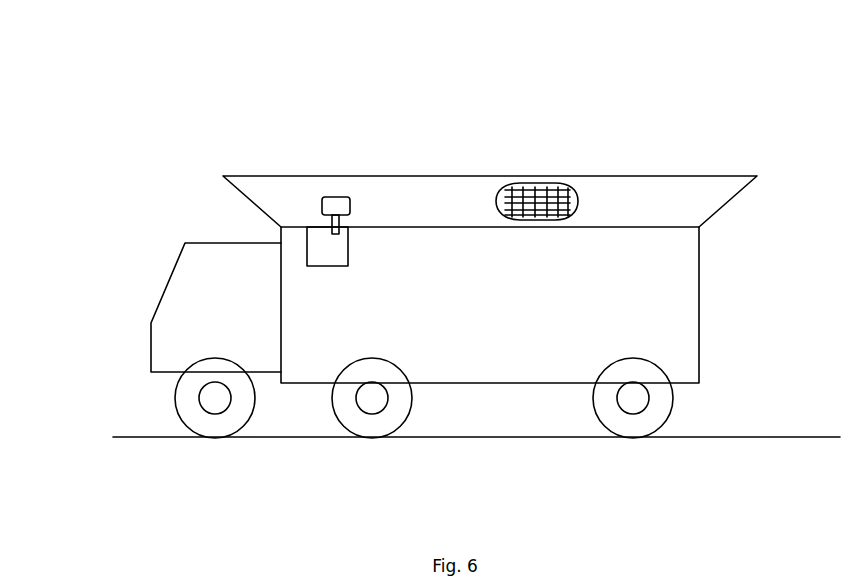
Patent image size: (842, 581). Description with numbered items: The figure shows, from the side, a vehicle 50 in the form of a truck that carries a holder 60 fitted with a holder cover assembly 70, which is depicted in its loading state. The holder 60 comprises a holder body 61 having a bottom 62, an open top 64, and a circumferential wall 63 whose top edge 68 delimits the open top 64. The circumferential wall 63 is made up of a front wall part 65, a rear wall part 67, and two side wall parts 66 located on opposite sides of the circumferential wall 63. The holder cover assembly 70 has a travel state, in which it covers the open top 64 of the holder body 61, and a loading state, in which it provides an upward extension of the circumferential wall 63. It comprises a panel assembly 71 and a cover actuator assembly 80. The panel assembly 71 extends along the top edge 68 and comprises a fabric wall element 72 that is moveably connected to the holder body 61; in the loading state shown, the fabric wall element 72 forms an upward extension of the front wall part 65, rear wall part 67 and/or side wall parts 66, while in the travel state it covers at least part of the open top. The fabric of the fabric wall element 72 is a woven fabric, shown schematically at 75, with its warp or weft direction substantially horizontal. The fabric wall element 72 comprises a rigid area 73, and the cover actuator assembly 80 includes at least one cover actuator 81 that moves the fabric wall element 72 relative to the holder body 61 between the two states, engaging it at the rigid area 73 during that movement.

The vehicle 50 is at (175, 194).
The holder 60 is at (658, 308).
The holder body 61 is at (515, 318).
The bottom 62 is at (553, 390).
The circumferential wall 63 is at (460, 328).
The open top 64 is at (386, 227).
The front wall part 65 is at (277, 283).
The side wall parts 66 is at (338, 315).
The rear wall part 67 is at (698, 262).
The top edge 68 is at (438, 225).
The holder cover assembly 70 is at (590, 142).
The panel assembly 71 is at (640, 208).
The fabric wall element 72 is at (717, 197).
The rigid area 73 is at (337, 210).
The woven fabric 75 is at (518, 183).
The cover actuator assembly 80 is at (338, 247).
The cover actuator 81 is at (340, 220).